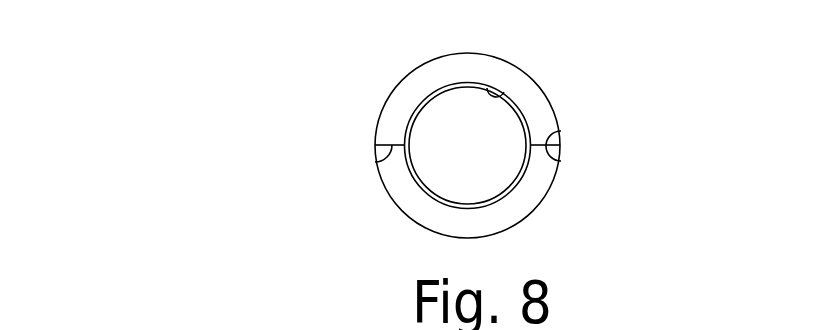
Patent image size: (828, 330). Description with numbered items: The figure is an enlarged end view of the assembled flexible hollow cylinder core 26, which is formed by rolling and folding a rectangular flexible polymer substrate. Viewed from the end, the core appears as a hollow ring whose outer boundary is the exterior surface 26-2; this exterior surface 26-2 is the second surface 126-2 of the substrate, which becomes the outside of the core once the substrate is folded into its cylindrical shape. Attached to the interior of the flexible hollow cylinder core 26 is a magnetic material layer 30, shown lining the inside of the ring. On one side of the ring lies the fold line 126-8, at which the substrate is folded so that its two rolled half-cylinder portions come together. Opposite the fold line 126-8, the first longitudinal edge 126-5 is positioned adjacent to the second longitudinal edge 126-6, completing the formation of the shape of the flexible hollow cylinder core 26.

The flexible hollow cylinder core 26 is at (188, 97).
The exterior surface 26-2 is at (395, 125).
The second surface 126-2 is at (413, 71).
The magnetic material layer 30 is at (503, 102).
The first longitudinal edge 126-5 is at (557, 130).
The second longitudinal edge 126-6 is at (557, 161).
The fold line 126-8 is at (377, 166).